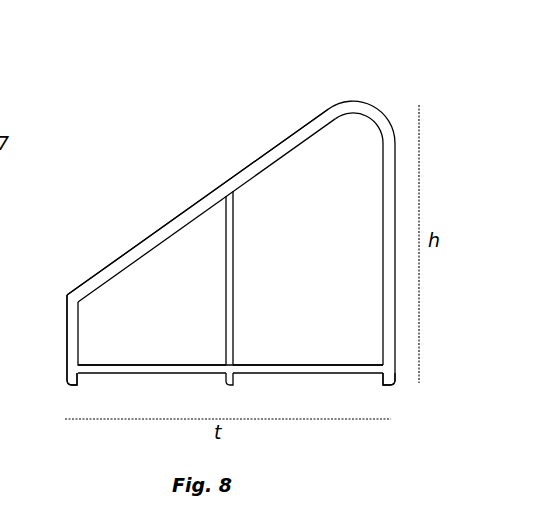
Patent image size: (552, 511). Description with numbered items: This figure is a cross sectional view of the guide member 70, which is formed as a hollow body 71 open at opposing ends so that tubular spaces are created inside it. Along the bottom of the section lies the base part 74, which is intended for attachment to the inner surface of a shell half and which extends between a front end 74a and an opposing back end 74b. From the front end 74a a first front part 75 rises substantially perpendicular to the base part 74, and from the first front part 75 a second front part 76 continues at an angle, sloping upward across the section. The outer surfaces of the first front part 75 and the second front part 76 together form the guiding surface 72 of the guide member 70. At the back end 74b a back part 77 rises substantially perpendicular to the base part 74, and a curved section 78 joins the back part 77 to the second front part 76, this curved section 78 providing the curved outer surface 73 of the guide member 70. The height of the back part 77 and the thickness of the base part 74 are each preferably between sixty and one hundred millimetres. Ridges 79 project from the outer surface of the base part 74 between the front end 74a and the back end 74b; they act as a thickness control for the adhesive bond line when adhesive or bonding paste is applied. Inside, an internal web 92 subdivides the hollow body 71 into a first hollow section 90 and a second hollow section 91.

The guide member 70 is at (162, 144).
The hollow body 71 is at (237, 184).
The guiding surface 72 is at (172, 217).
The curved outer surface 73 is at (371, 103).
The base part 74 is at (145, 373).
The front end 74a is at (68, 375).
The back end 74b is at (389, 373).
The first front part 75 is at (66, 330).
The second front part 76 is at (255, 163).
The back part 77 is at (383, 213).
The curved section 78 is at (383, 113).
The ridges 79 is at (66, 386).
The first hollow section 90 is at (127, 298).
The second hollow section 91 is at (321, 250).
The internal web 92 is at (233, 324).